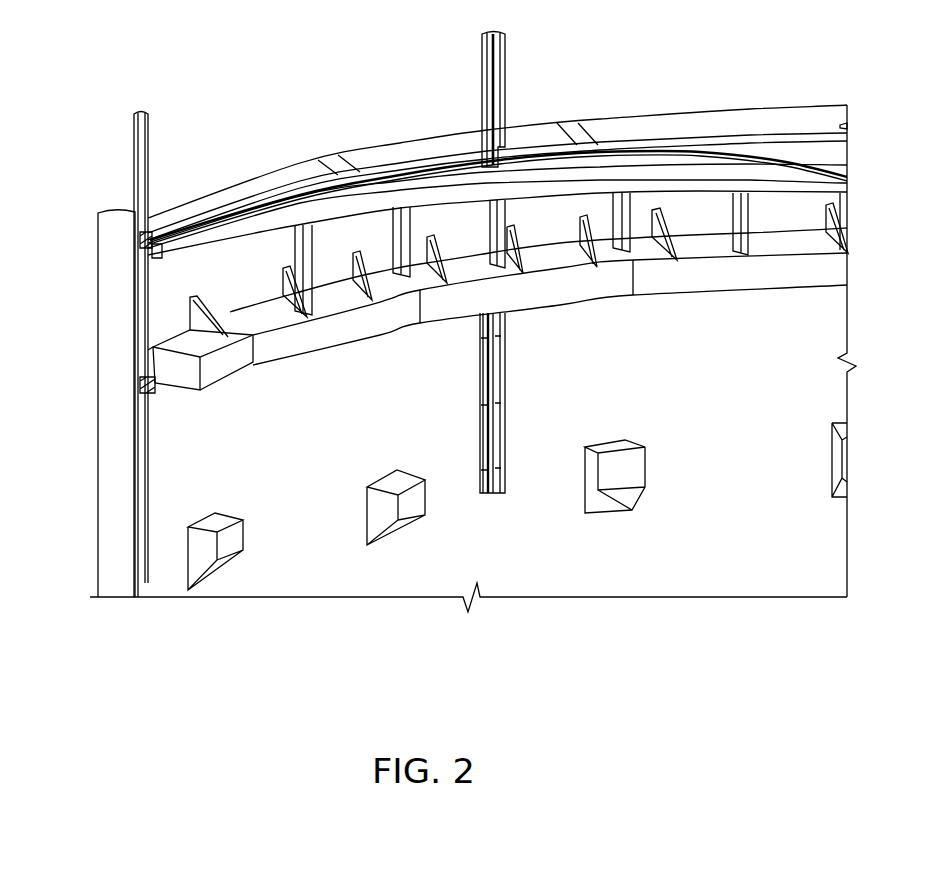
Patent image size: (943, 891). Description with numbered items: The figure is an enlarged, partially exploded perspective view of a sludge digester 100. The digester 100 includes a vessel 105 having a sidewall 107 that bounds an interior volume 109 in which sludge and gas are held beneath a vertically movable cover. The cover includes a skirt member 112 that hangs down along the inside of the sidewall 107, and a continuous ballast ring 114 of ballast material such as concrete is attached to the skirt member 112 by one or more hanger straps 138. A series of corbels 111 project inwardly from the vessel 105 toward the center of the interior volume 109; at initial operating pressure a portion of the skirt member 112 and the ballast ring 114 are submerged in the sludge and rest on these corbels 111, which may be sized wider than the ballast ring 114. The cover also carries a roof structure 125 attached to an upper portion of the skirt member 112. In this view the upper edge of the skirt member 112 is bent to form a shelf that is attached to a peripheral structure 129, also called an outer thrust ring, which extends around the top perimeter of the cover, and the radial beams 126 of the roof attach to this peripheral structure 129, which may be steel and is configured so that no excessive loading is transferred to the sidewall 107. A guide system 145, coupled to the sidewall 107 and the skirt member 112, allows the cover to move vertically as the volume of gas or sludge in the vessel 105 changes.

The sludge digester 100 is at (121, 80).
The vessel 105 is at (556, 132).
The sidewall 107 is at (118, 256).
The interior volume 109 is at (742, 427).
The corbels 111 is at (407, 497).
The skirt member 112 is at (337, 243).
The ballast ring 114 is at (222, 367).
The roof structure 125 is at (637, 147).
The radial beams 126 is at (668, 154).
The peripheral structure 129 is at (146, 245).
The hanger straps 138 is at (513, 233).
The guide system 145 is at (149, 136).